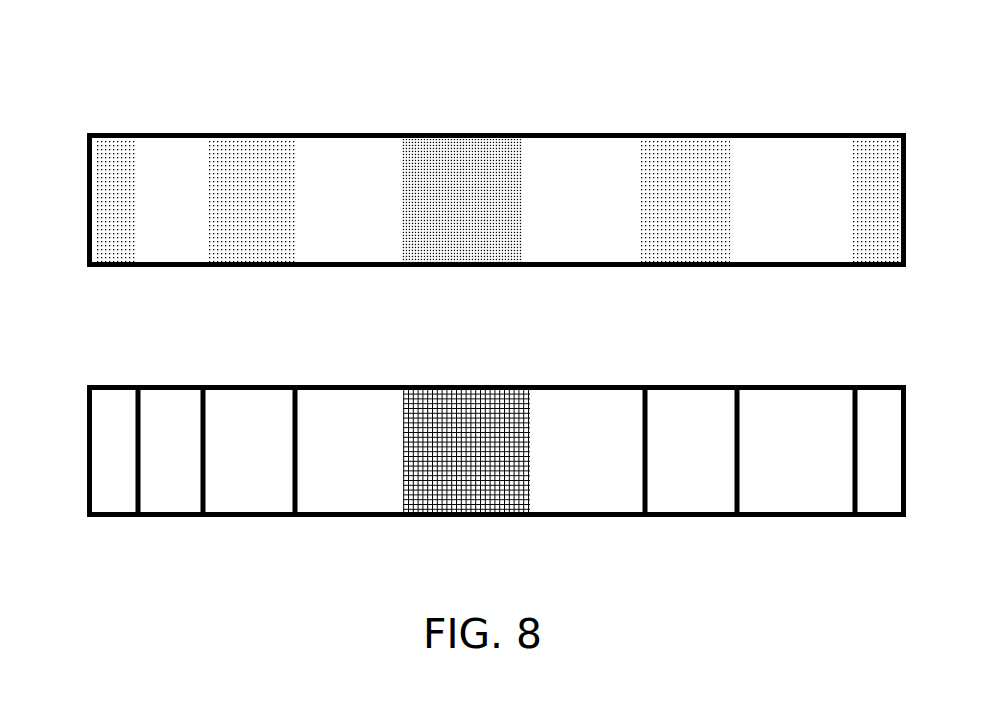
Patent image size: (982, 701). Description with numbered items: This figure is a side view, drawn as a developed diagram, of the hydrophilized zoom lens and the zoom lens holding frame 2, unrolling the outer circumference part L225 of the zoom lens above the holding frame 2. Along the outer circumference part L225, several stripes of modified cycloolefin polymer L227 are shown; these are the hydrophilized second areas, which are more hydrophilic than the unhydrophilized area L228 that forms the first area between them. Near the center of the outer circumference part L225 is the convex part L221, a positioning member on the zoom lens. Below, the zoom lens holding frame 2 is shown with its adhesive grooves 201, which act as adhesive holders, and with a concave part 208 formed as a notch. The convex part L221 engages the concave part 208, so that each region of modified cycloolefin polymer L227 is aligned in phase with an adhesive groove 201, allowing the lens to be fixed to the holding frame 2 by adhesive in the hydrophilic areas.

The outer circumference part L225 is at (457, 200).
The modified cycloolefin polymer L227 is at (900, 212).
The convex part L221 is at (464, 172).
The unhydrophilized area L228 is at (785, 173).
The zoom lens holding frame 2 is at (468, 451).
The adhesive grooves 201 is at (882, 478).
The concave part 208 is at (447, 413).